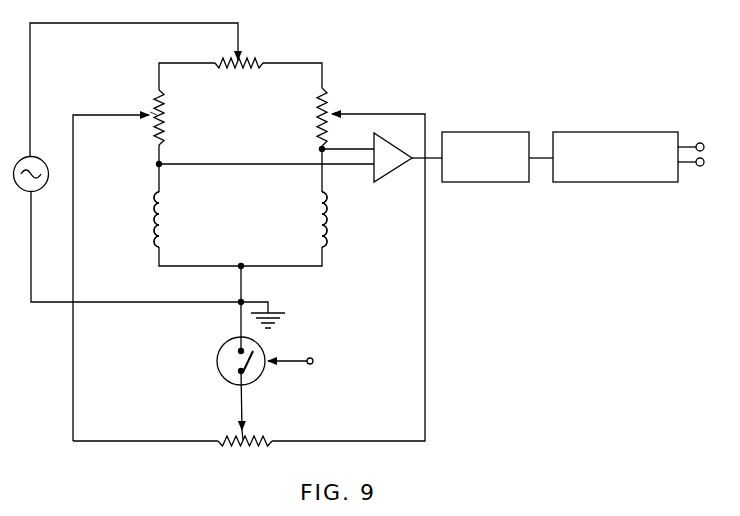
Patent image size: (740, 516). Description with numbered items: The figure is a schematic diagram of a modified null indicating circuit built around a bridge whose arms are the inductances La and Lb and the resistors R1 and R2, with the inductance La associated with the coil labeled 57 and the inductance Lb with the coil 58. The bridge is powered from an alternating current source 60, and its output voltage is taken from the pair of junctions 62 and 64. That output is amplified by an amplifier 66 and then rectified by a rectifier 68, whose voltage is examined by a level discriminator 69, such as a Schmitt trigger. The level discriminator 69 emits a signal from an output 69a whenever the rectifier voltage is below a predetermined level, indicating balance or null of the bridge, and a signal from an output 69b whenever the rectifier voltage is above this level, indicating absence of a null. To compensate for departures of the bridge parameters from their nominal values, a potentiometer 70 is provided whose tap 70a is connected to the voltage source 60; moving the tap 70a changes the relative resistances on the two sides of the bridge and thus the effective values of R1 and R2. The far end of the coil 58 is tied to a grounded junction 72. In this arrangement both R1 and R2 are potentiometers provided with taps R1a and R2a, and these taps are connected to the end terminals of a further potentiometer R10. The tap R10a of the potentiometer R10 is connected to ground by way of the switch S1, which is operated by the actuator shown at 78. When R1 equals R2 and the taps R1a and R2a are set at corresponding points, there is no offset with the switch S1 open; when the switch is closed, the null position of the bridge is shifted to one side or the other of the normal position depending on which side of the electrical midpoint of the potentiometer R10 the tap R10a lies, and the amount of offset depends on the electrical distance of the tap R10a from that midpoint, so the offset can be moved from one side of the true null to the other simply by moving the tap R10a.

The alternating current source 60 is at (38, 159).
The junction 62 is at (163, 162).
The junction 64 is at (320, 150).
The amplifier 66 is at (389, 166).
The rectifier 68 is at (516, 131).
The level discriminator 69 is at (612, 131).
The output 69a is at (689, 170).
The output 69b is at (688, 144).
The potentiometer 70 is at (233, 70).
The tap 70a is at (243, 55).
The grounded junction 72 is at (242, 263).
The coil La 57 is at (153, 224).
The coil 58 is at (330, 224).
The switch actuator 78 is at (314, 358).
The resistor R1 is at (174, 117).
The potentiometer tap R1a is at (150, 112).
The resistor R2 is at (308, 117).
The potentiometer tap R2a is at (336, 112).
The inductance La is at (173, 219).
The inductance Lb is at (304, 219).
The switch S1 is at (263, 349).
The potentiometer R10 is at (245, 453).
The tap R10a is at (249, 429).